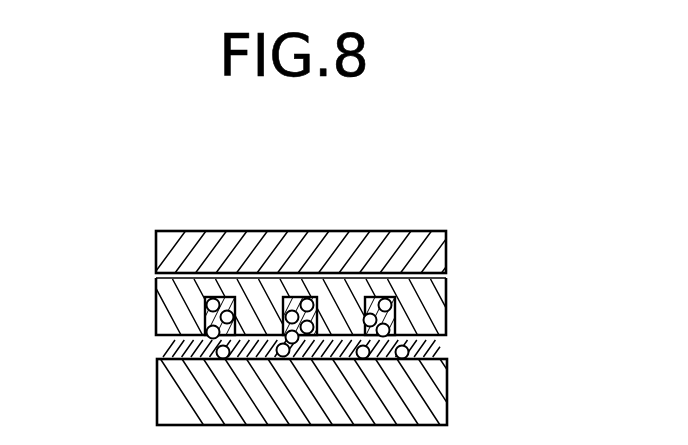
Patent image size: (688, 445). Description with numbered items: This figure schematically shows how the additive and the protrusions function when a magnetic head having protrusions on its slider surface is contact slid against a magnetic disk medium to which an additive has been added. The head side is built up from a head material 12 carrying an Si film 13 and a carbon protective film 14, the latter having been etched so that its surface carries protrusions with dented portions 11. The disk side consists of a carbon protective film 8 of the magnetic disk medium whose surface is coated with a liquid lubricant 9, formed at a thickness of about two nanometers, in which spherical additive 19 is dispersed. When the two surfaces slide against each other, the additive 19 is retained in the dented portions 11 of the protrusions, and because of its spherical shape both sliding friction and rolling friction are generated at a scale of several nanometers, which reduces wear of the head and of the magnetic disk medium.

The head material 12 is at (156, 250).
The Si film 13 is at (154, 278).
The carbon protective film 14 is at (156, 312).
The dented portion 11 is at (395, 297).
The spherical additive 19 is at (395, 319).
The liquid lubricant 9 is at (430, 353).
The carbon protective film of the magnetic disk medium 8 is at (430, 408).